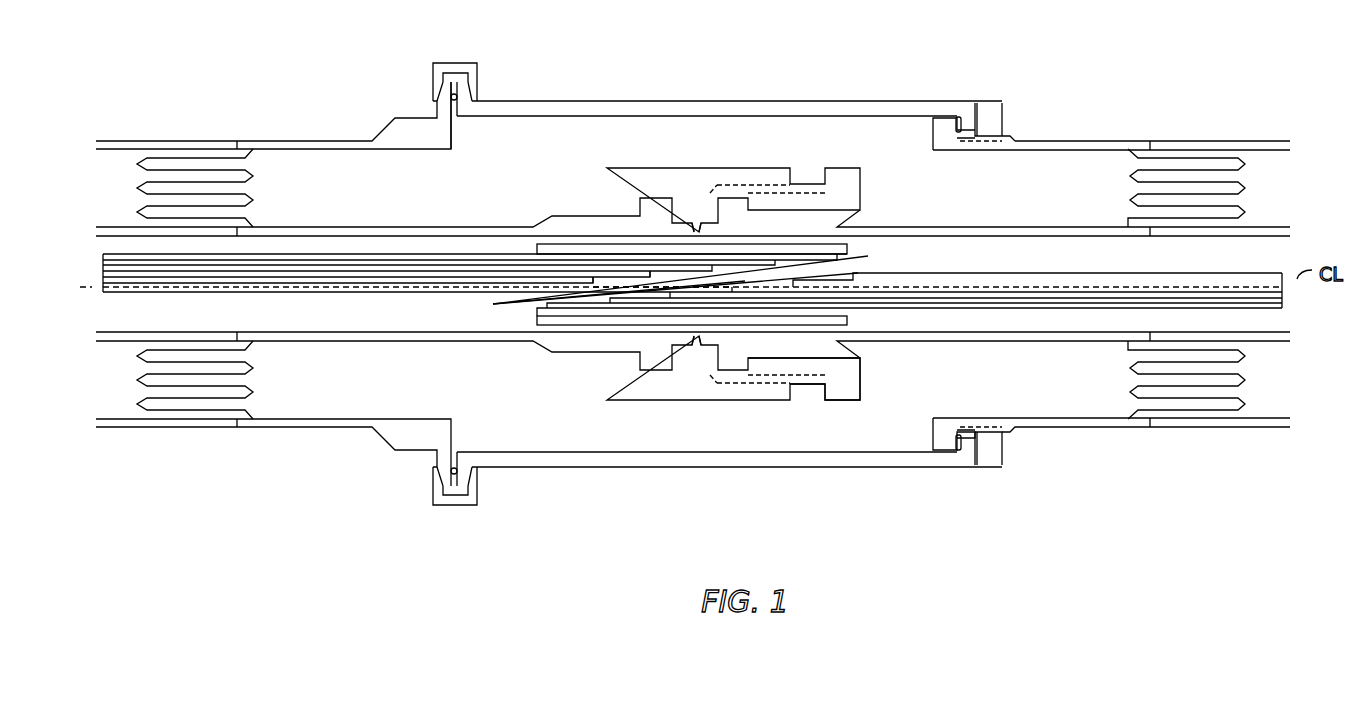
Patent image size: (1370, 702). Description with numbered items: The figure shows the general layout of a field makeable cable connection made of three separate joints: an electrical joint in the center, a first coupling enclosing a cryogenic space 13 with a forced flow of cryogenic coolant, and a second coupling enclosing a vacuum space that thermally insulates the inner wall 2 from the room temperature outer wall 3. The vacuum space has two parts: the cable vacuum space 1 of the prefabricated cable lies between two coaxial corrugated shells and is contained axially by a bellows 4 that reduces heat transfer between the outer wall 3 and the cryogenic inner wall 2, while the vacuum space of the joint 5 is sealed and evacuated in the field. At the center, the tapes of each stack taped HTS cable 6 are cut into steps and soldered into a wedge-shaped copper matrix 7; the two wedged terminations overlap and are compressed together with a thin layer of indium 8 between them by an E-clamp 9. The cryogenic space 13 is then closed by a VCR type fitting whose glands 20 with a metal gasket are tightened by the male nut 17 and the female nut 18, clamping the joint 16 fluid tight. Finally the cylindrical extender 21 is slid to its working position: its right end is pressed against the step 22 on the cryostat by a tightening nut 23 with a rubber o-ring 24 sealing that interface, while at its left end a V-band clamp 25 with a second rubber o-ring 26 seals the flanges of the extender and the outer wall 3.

The cable vacuum space 1 is at (98, 196).
The inner wall 2 is at (1296, 333).
The outer wall 3 is at (1294, 420).
The bellows 4 is at (1276, 398).
The vacuum space of the joint 5 is at (697, 155).
The stack taped HTS cable 6 is at (300, 275).
The wedge-shaped copper matrix 7 is at (858, 268).
The thin layer of indium 8 is at (622, 287).
The E-clamp 9 is at (570, 318).
The cryogenic space 13 is at (909, 279).
The joint 16 is at (695, 337).
The male nut 17 is at (850, 384).
The female nut 18 is at (633, 385).
The glands 20 is at (573, 343).
The cylindrical extender 21 is at (798, 101).
The step 22 is at (947, 148).
The tightening nut 23 is at (995, 113).
The rubber o-ring 24 is at (957, 117).
The V-band clamp 25 is at (463, 63).
The second rubber o-ring 26 is at (437, 98).